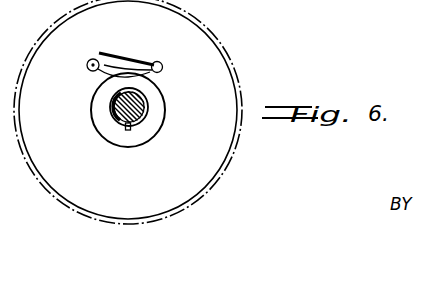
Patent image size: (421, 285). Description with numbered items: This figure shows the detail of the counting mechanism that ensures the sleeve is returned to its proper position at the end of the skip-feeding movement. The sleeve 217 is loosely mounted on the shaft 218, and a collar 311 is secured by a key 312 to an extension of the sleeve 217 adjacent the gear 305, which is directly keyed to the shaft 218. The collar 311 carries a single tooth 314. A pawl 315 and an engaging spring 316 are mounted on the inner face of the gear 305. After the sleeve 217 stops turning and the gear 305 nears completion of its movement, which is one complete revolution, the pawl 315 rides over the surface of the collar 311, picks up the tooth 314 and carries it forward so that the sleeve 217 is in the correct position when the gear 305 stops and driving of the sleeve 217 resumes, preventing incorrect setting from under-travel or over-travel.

The gear 305 is at (217, 58).
The collar 311 is at (95, 121).
The shaft 218 is at (143, 104).
The sleeve 217 is at (147, 118).
The key 312 is at (128, 130).
The tooth 314 is at (143, 75).
The pawl 315 is at (100, 74).
The engaging spring 316 is at (146, 61).